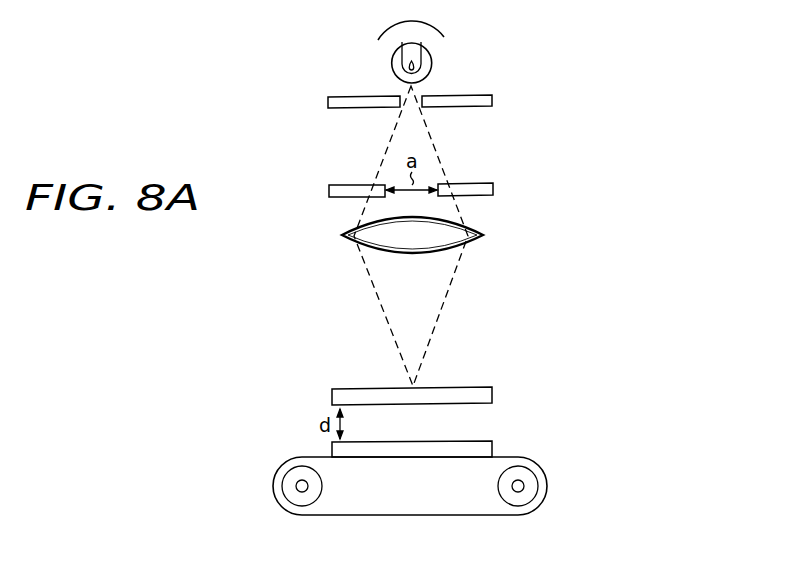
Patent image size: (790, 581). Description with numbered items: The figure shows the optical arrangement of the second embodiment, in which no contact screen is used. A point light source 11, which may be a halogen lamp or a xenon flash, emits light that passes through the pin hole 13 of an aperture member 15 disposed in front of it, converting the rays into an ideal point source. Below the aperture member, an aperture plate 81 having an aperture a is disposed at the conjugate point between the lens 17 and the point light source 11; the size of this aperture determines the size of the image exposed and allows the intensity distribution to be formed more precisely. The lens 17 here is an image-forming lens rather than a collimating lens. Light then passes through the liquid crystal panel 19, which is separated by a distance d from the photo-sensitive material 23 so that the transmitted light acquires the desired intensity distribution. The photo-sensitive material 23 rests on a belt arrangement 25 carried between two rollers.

The point light source 11 is at (432, 55).
The pin hole 13 is at (415, 102).
The aperture member 15 is at (487, 99).
The aperture plate 81 is at (487, 189).
The image-forming lens 17 is at (480, 232).
The liquid crystal panel 19 is at (482, 398).
The photo-sensitive material 23 is at (482, 450).
The conveyor belt 25 is at (547, 477).